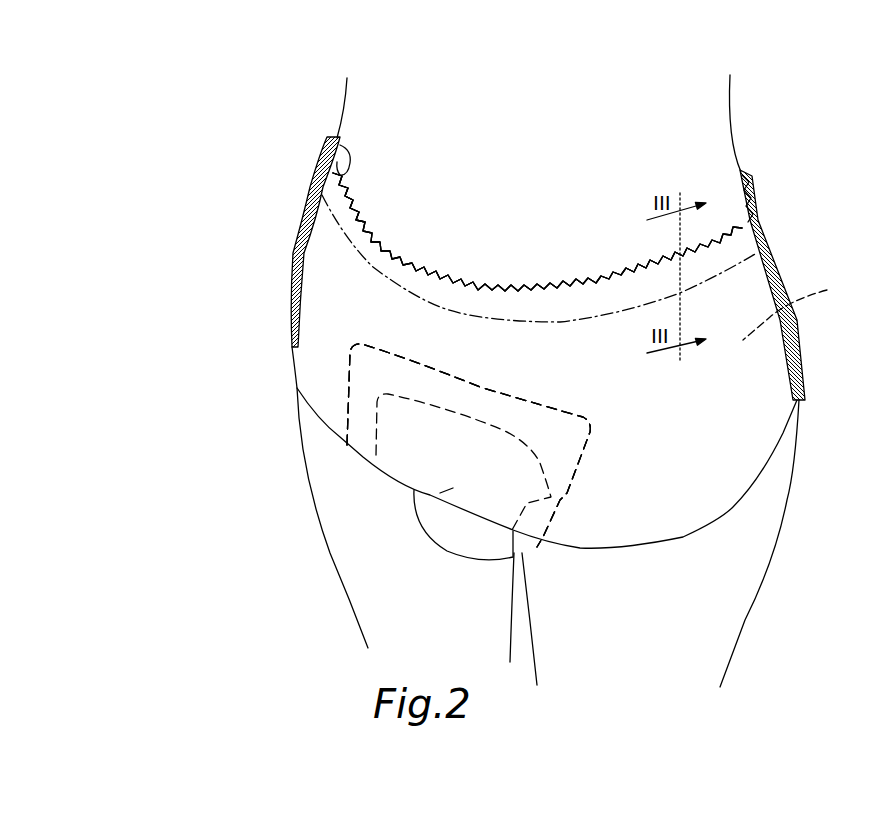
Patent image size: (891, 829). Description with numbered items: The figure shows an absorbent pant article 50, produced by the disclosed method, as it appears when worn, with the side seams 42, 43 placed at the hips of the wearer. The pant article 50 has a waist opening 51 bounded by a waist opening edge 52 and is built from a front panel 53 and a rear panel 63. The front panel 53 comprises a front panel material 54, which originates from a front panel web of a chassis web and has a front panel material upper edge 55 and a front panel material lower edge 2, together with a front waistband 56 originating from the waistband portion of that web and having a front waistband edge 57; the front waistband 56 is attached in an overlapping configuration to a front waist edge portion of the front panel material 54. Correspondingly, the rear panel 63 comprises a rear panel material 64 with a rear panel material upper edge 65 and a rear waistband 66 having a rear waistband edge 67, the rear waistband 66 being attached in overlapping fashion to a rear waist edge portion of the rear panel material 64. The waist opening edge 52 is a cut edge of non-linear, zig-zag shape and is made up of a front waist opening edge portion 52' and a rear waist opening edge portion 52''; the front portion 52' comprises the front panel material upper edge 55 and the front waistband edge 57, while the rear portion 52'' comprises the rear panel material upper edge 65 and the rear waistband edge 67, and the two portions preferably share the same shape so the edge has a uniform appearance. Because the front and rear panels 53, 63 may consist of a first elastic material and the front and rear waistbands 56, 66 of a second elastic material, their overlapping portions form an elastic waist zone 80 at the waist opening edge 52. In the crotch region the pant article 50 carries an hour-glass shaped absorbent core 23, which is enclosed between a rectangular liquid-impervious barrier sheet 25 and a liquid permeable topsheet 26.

The front panel material lower edge 2 is at (640, 550).
The absorbent core 23 is at (414, 505).
The liquid-impervious barrier sheet 25 is at (560, 500).
The liquid permeable topsheet 26 is at (560, 500).
The side seam 42 is at (292, 266).
The side seam 43 is at (797, 331).
The absorbent pant article 50 is at (230, 186).
The waist opening 51 is at (592, 262).
The waist opening edge 52 is at (296, 146).
The front waist opening edge portion 52' is at (371, 175).
The rear waist opening edge portion 52'' is at (773, 146).
The front panel 53 is at (740, 405).
The front panel material 54 is at (670, 418).
The front panel material upper edge 55 is at (502, 282).
The front waistband 56 is at (453, 298).
The front waistband edge 57 is at (502, 282).
The rear panel 63 is at (740, 306).
The rear panel material 64 is at (801, 307).
The rear panel material upper edge 65 is at (750, 172).
The rear waistband 66 is at (753, 204).
The rear waistband edge 67 is at (750, 172).
The elastic waist zone 80 is at (378, 259).